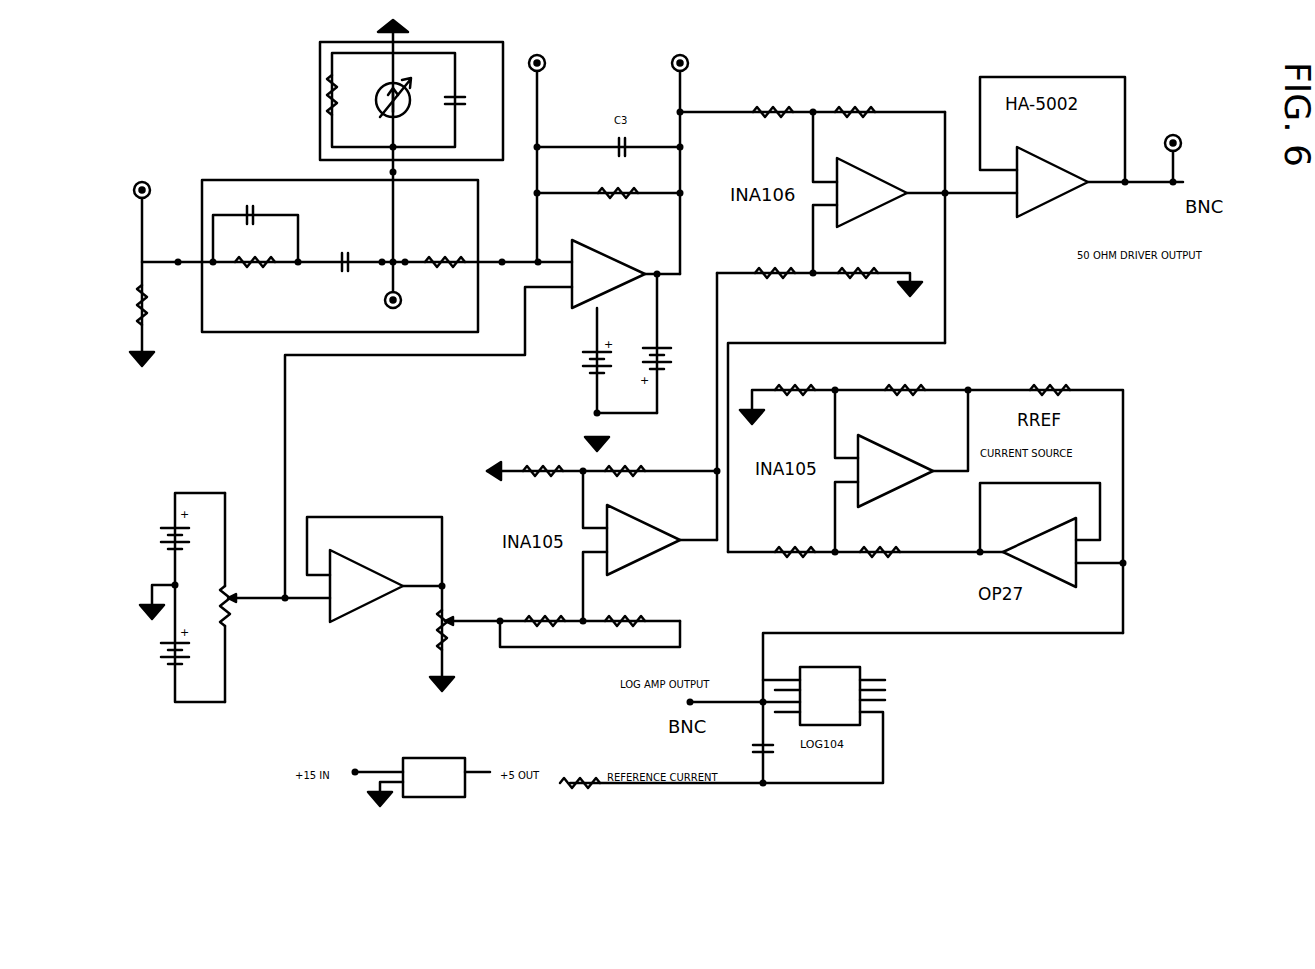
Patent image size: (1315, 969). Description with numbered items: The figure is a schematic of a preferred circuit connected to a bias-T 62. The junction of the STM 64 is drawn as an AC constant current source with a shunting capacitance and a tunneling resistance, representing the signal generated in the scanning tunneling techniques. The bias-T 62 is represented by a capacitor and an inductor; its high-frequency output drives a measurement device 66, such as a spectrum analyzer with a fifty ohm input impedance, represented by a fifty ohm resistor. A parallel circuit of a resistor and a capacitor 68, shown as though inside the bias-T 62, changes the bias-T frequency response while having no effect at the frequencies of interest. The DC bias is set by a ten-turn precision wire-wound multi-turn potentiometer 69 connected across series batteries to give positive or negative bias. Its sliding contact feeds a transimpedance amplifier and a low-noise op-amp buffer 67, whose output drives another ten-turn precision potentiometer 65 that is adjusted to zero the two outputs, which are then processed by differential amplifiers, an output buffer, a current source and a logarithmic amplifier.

The bias-T 62 is at (366, 102).
The junction of the STM 64 is at (357, 256).
The potentiometer 65 is at (555, 633).
The measurement device 66 is at (128, 274).
The buffer 67 is at (374, 592).
The parallel circuit of R11 and C4 68 is at (251, 277).
The potentiometer 69 is at (275, 597).